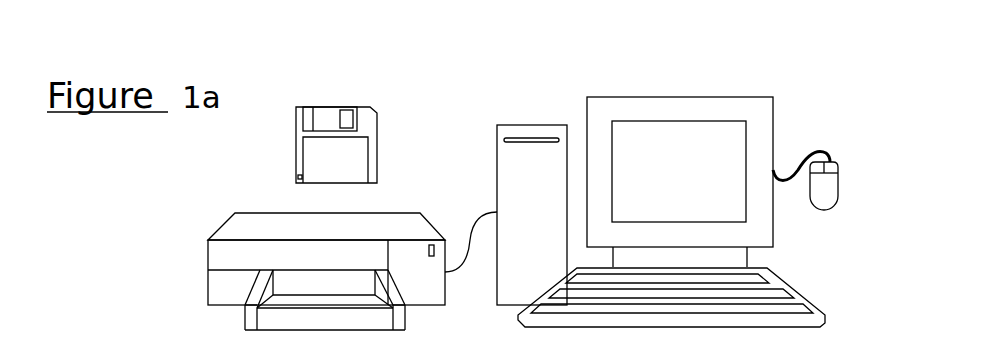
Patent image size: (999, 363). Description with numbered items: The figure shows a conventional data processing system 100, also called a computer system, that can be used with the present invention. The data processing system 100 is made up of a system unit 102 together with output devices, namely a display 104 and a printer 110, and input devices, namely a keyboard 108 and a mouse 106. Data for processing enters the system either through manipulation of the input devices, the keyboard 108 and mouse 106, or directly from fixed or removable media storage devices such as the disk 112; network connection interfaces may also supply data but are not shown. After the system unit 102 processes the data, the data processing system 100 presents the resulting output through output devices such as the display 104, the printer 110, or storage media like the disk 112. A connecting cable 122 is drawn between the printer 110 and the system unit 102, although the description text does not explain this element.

The data processing system 100 is at (766, 70).
The system unit 102 is at (500, 193).
The display 104 is at (741, 182).
The mouse 106 is at (874, 192).
The keyboard 108 is at (726, 297).
The printer 110 is at (271, 265).
The disk 112 is at (292, 145).
The cable 122 is at (485, 287).